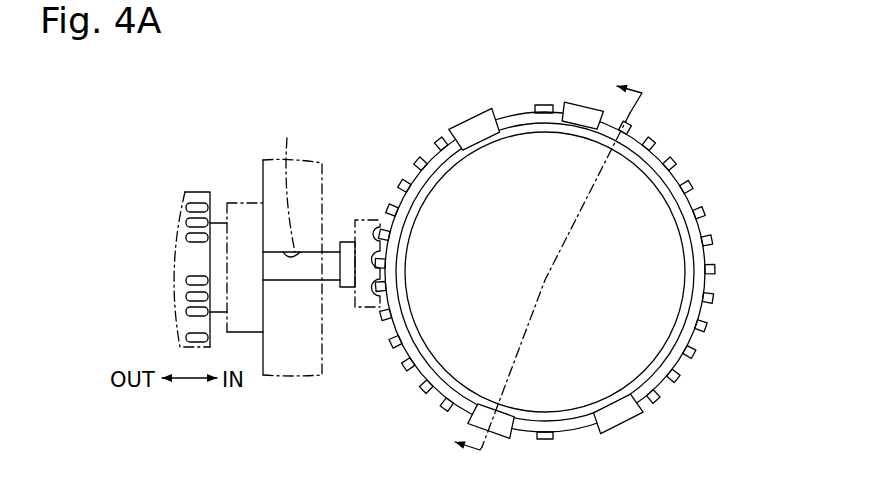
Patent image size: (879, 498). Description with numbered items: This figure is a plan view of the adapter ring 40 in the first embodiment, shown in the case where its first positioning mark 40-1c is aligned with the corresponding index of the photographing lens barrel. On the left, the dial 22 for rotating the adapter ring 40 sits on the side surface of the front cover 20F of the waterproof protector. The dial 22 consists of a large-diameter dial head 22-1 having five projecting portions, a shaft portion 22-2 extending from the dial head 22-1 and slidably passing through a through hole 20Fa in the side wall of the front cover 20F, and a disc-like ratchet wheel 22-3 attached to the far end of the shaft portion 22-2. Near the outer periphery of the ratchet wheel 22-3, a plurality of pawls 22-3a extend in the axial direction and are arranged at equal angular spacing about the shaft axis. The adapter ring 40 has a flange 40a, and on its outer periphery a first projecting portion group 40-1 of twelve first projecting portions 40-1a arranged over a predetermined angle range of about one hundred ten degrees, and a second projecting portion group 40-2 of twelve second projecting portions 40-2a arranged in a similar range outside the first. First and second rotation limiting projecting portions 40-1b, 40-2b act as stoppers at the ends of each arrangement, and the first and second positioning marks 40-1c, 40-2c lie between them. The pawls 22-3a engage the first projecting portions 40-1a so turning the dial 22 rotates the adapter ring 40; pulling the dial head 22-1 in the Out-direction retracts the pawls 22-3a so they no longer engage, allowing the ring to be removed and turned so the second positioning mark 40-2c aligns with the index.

The dial (zoom knob) 22 is at (226, 181).
The dial head 22-1 is at (192, 191).
The shaft portion 22-2 is at (333, 258).
The ratchet wheel 22-3 is at (362, 202).
The pawls 22-3a is at (386, 254).
The front cover 20F is at (296, 386).
The through hole 20Fa is at (282, 184).
The adapter ring 40 is at (730, 170).
The flange 40a is at (407, 313).
The first projecting portion group 40-1 is at (352, 402).
The first projecting portions 40-1a is at (385, 329).
The first rotation limiting projecting portion 40-1b is at (470, 118).
The first positioning mark 40-1c is at (538, 106).
The second projecting portion group 40-2 is at (686, 147).
The second projecting portions 40-2a is at (705, 207).
The second rotation limiting projecting portion 40-2b is at (583, 113).
The second positioning mark 40-2c is at (540, 440).